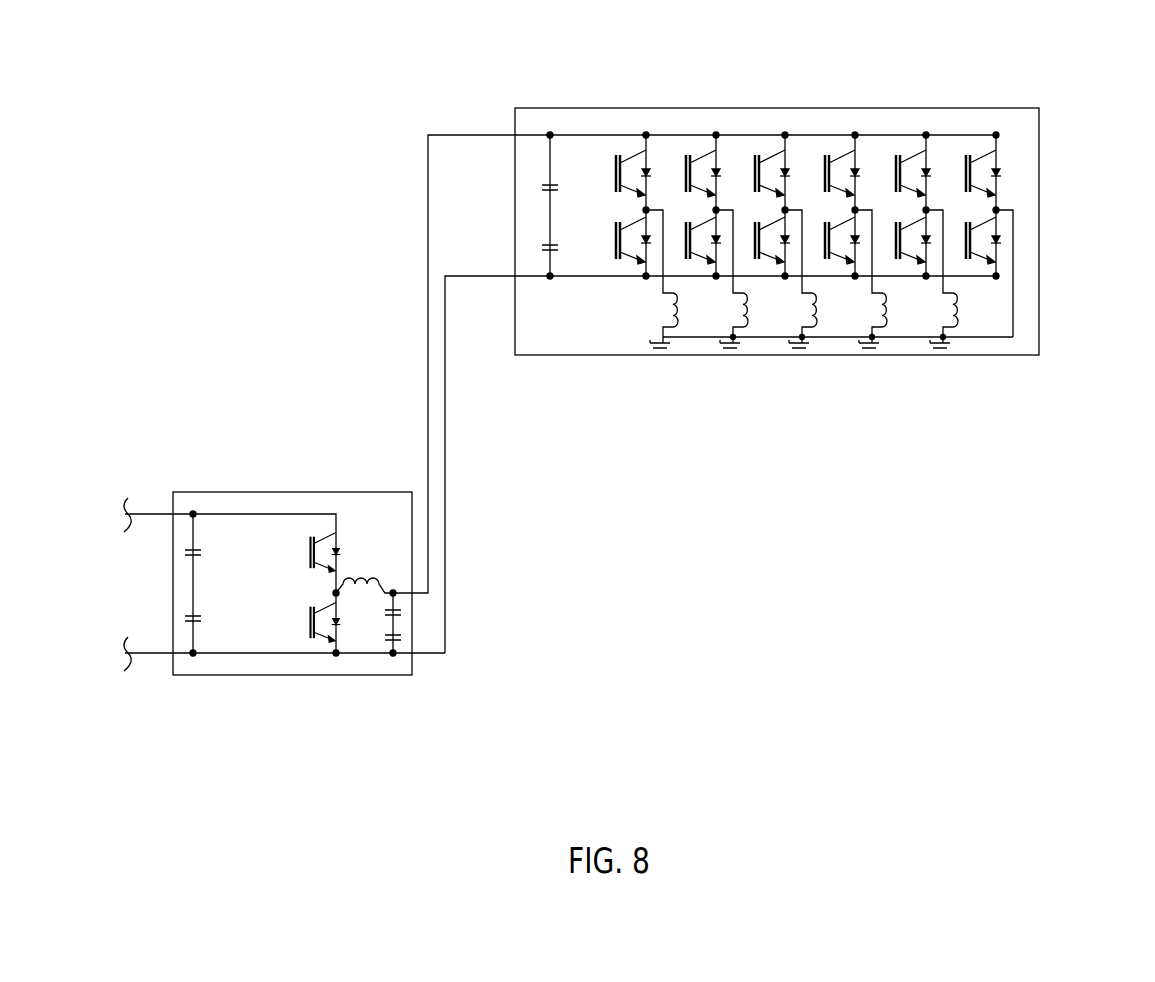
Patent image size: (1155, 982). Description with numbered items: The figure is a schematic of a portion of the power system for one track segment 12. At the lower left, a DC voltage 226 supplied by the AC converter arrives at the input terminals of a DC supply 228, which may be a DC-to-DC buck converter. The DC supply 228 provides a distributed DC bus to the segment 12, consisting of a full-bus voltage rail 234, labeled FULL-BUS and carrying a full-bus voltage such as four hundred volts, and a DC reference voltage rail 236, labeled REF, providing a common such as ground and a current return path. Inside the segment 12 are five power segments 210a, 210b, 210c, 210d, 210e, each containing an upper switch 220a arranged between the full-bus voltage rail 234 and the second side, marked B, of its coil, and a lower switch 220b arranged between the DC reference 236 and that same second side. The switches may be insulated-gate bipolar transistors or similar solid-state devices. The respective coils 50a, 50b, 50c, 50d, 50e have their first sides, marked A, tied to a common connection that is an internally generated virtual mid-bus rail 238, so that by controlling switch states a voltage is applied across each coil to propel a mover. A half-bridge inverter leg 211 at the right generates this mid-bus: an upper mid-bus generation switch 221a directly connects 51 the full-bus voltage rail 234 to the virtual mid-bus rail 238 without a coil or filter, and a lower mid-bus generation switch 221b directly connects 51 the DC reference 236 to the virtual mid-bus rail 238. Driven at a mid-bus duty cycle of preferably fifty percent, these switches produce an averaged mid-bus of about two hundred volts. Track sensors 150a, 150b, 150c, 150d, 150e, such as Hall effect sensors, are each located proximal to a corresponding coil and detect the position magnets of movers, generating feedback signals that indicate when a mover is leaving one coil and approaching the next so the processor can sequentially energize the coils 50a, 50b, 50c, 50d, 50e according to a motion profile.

The segment 12 is at (1040, 128).
The coil 50a is at (654, 318).
The coil 50b is at (724, 318).
The coil 50c is at (793, 318).
The coil 50d is at (863, 318).
The coil 50e is at (933, 318).
The direct connection 51 is at (1005, 314).
The track sensor 150a is at (658, 350).
The track sensor 150b is at (728, 350).
The track sensor 150c is at (797, 350).
The track sensor 150d is at (867, 350).
The track sensor 150e is at (938, 350).
The first power segment 210a is at (593, 156).
The second power segment 210b is at (716, 130).
The power segment 210c is at (785, 130).
The power segment 210d is at (855, 130).
The power segment 210e is at (926, 130).
The half-bridge inverter leg 211 is at (1047, 178).
The upper switch 220a is at (595, 172).
The lower switch 220b is at (596, 240).
The upper mid-bus generation switch 221a is at (1004, 160).
The lower mid-bus generation switch 221b is at (986, 274).
The DC voltage 226 is at (272, 539).
The DC supply 228 is at (255, 492).
The full-bus voltage rail 234 is at (426, 175).
The DC reference voltage rail 236 is at (446, 380).
The virtual mid-bus rail 238 is at (1004, 339).